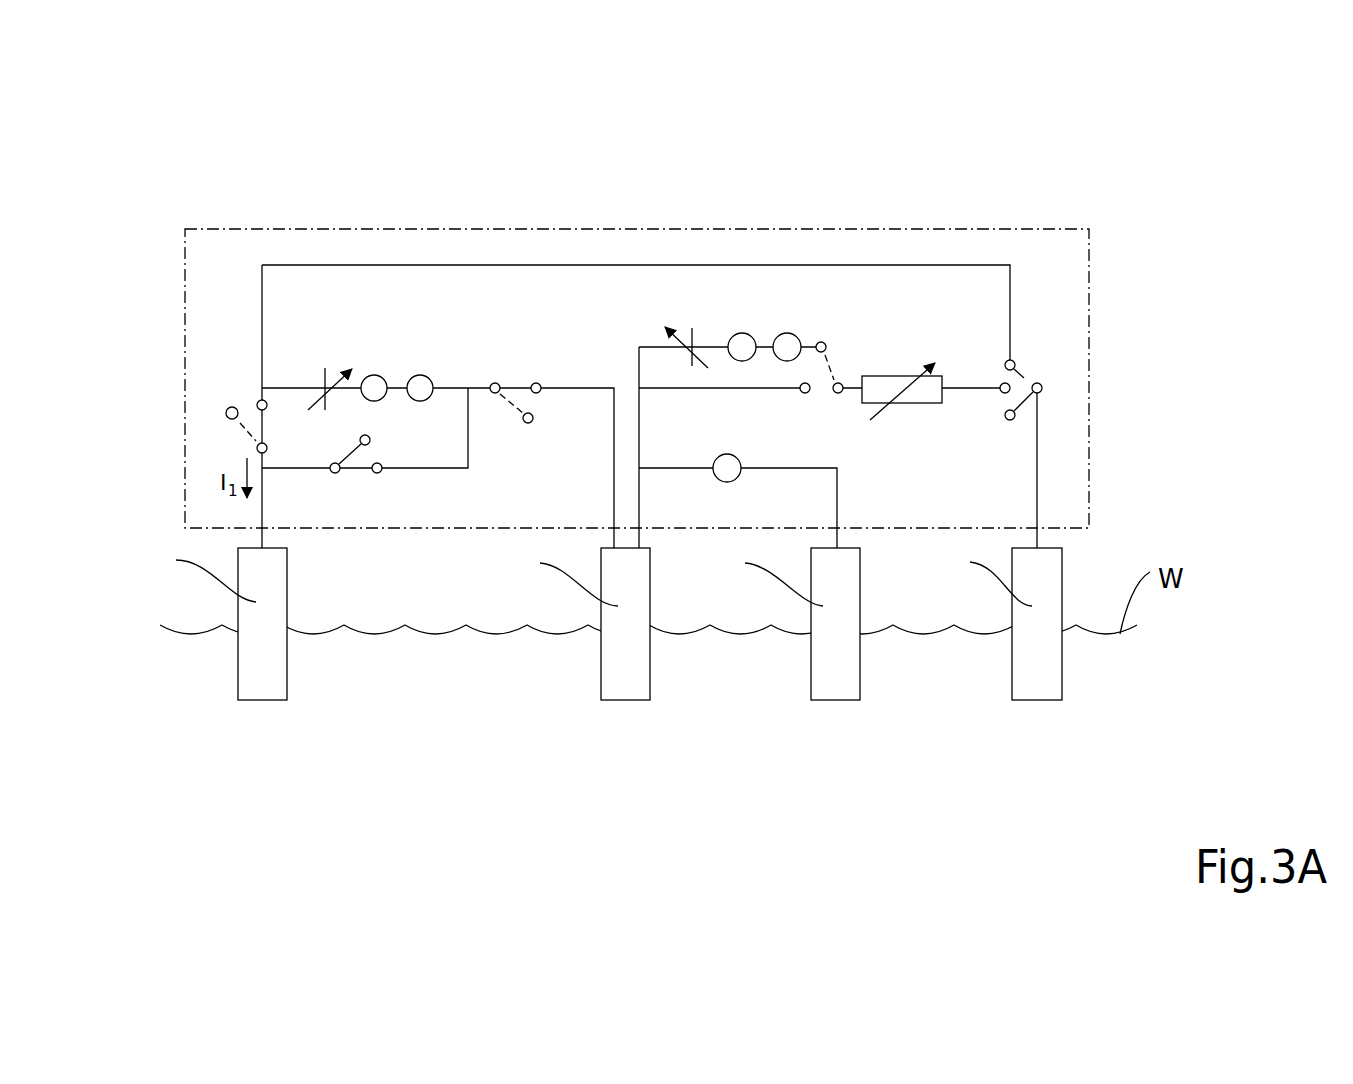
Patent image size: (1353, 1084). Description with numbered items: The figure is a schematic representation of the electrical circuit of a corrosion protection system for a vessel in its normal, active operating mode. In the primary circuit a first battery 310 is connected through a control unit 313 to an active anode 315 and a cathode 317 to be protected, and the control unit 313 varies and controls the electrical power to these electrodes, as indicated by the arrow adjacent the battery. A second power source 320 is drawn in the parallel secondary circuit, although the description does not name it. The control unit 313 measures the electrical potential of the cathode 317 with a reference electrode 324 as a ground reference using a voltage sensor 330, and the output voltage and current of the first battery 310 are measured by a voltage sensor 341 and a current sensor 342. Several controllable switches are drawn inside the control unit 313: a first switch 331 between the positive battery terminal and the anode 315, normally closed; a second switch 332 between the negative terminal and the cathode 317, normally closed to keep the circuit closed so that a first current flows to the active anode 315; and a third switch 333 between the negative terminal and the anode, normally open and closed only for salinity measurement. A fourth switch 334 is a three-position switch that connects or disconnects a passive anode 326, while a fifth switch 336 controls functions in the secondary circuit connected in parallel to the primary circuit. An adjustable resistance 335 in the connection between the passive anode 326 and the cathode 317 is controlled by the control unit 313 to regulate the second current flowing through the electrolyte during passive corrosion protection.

The first battery 310 is at (298, 330).
The control unit 313 is at (1090, 346).
The active anode 315 is at (248, 673).
The cathode 317 is at (618, 678).
The second power source 320 is at (666, 297).
The reference electrode 324 is at (822, 676).
The passive anode 326 is at (1027, 683).
The voltage sensor 330 is at (736, 430).
The first switch 331 is at (226, 441).
The second switch 332 is at (515, 360).
The third switch 333 is at (394, 452).
The fourth switch 334 is at (1041, 362).
The adjustable resistance 335 is at (913, 356).
The fifth switch 336 is at (832, 336).
The voltage sensor 341 is at (383, 358).
The current sensor 342 is at (428, 358).